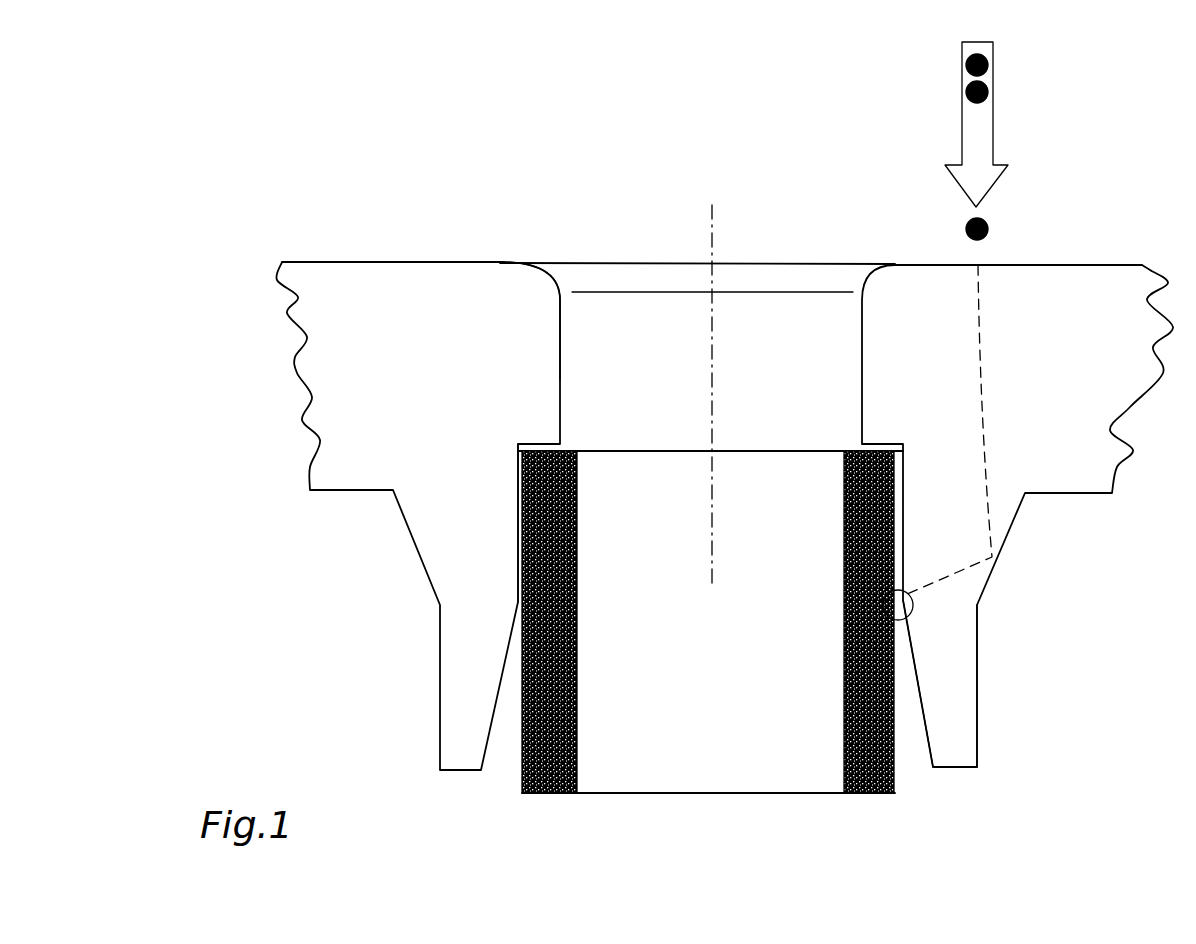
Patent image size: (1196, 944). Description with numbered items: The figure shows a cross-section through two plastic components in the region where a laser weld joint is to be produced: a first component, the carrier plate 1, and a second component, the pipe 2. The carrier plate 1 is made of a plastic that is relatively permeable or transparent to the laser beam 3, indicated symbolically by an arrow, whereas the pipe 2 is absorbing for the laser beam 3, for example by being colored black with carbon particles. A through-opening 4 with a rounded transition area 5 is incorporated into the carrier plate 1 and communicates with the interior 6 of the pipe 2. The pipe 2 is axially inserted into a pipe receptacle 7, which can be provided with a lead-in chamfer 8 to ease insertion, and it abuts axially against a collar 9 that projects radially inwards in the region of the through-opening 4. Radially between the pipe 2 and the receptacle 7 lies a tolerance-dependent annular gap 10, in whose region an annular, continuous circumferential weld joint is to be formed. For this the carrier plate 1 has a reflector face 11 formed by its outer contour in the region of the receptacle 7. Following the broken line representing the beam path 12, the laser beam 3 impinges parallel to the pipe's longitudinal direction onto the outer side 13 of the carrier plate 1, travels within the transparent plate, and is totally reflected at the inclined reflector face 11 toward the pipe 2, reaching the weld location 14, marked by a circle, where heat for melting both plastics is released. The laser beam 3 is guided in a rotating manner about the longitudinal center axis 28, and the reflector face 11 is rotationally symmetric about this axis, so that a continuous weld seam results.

The first component / carrier plate 1 is at (1084, 272).
The second component / pipe 2 is at (585, 522).
The laser beam 3 is at (993, 110).
The through-opening 4 is at (762, 322).
The rounded transition area 5 is at (529, 245).
The interior 6 is at (720, 703).
The pipe receptacle 7 is at (445, 552).
The lead-in chamfer 8 is at (942, 745).
The collar 9 is at (548, 385).
The annular gap 10 is at (518, 475).
The reflector face 11 is at (1013, 525).
The beam path 12 is at (985, 397).
The outer side 13 is at (1040, 263).
The weld location 14 is at (906, 590).
The longitudinal center axis 28 is at (713, 477).